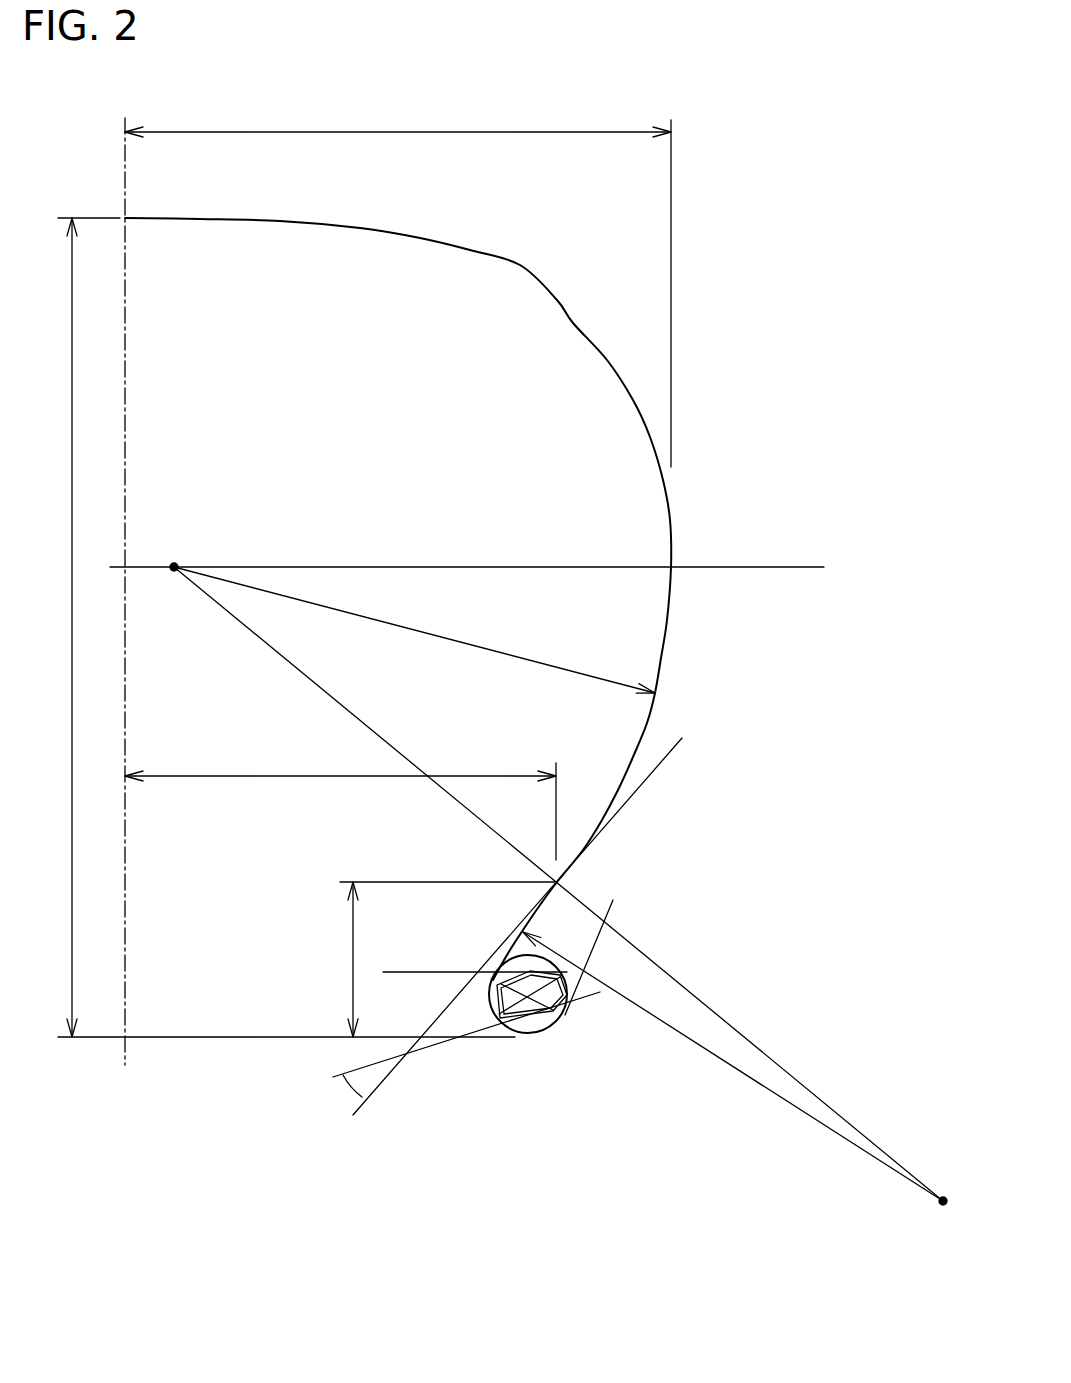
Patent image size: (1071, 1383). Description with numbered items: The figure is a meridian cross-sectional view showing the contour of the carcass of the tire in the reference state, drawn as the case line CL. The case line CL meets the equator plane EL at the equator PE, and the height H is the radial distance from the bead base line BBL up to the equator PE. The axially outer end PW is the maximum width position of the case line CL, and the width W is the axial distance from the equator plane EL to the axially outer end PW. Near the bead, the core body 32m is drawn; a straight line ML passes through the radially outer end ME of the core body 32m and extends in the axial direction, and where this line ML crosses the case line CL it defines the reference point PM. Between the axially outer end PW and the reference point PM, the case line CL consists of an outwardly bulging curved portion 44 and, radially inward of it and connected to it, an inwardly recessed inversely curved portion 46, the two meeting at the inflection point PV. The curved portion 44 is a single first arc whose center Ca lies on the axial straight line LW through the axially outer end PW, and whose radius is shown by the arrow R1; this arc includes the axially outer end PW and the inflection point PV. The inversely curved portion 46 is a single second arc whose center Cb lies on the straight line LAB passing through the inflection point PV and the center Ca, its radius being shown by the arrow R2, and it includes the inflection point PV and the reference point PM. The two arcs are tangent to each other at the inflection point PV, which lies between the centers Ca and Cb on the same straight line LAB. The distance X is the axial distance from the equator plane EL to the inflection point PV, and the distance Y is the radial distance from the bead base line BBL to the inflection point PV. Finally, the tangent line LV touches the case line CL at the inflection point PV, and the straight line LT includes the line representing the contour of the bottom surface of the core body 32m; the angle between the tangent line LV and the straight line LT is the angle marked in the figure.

The curved portion 44 is at (661, 658).
The inversely curved portion 46 is at (526, 924).
The core body 32m is at (542, 1030).
The equator PE is at (122, 216).
The case line CL is at (521, 264).
The equator plane EL is at (138, 396).
The center of the first arc Ca is at (174, 566).
The straight line LW is at (515, 566).
The axially outer end PW is at (672, 567).
The radius of the first arc R1 is at (414, 630).
The radius of the second arc R2 is at (733, 1066).
The straight line LAB is at (773, 1060).
The center of the second arc Cb is at (942, 1204).
The tangent line LV is at (658, 762).
The inflection point PV is at (560, 882).
The radially outer end of the core body ME is at (516, 952).
The straight line ML is at (398, 972).
The reference point PM is at (496, 972).
The straight line LT is at (486, 1030).
The bead base line BBL is at (191, 1038).
The distance in the axial direction W is at (398, 285).
The distance in the radial direction H is at (84, 627).
The distance in the axial direction X is at (340, 803).
The distance in the radial direction Y is at (442, 959).